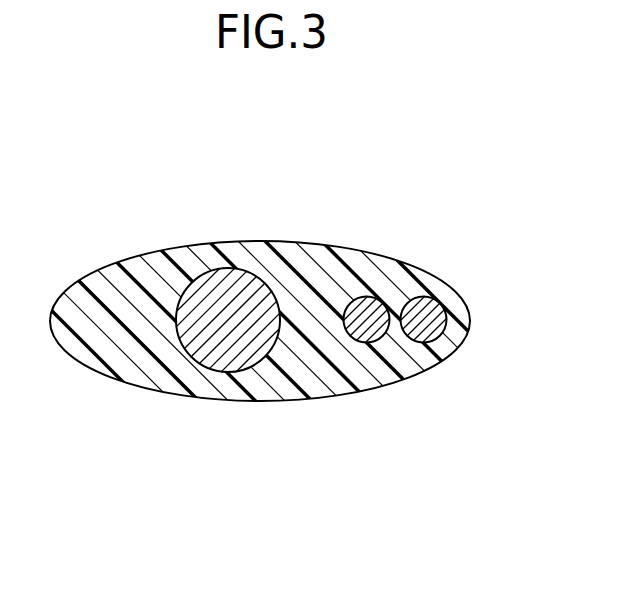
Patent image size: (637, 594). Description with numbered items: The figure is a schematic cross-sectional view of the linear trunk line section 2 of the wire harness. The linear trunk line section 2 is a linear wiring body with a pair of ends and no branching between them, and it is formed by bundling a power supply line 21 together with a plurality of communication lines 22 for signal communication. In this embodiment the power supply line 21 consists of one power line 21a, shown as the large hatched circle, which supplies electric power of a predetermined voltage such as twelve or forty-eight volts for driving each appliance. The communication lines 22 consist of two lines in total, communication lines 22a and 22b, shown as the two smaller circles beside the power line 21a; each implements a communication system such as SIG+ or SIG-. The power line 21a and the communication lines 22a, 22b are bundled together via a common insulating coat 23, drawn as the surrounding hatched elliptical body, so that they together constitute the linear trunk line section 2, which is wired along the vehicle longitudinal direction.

The linear trunk line section 2 is at (422, 117).
The power supply line 21 is at (224, 244).
The power line 21a is at (222, 283).
The communication line 22 is at (453, 154).
The communication line 22a is at (375, 312).
The communication line 22b is at (428, 310).
The insulating coat 23 is at (318, 252).